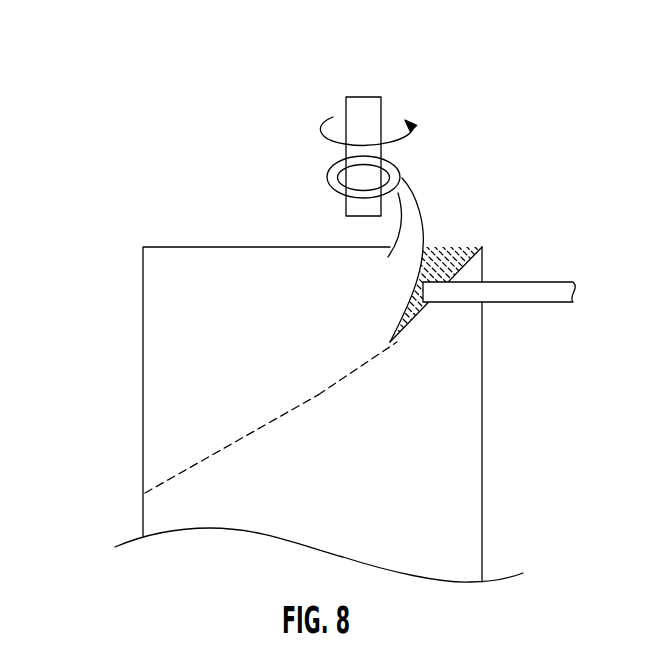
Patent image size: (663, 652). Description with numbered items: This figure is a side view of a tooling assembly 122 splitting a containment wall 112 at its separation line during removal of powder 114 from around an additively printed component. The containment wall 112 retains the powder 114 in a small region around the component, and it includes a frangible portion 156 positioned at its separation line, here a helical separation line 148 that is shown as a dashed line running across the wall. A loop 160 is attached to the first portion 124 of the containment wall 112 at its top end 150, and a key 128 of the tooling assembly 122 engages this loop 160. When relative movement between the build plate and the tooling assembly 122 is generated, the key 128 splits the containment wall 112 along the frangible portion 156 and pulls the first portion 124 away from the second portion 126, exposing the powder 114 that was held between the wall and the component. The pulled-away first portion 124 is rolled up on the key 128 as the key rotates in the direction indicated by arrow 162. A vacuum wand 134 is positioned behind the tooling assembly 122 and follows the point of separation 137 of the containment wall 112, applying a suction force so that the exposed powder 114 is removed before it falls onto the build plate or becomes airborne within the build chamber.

The containment wall 112 is at (122, 143).
The powder 114 is at (457, 226).
The tooling assembly 122 is at (438, 68).
The first portion of the containment wall 124 is at (188, 358).
The second portion of the containment wall 126 is at (450, 470).
The key 128 is at (357, 97).
The vacuum wand 134 is at (535, 282).
The point of separation 137 is at (401, 359).
The helical separation line 148 is at (318, 396).
The top end of the containment wall 150 is at (110, 278).
The frangible portion 156 is at (357, 368).
The loop 160 is at (333, 182).
The arrow 162 is at (420, 131).